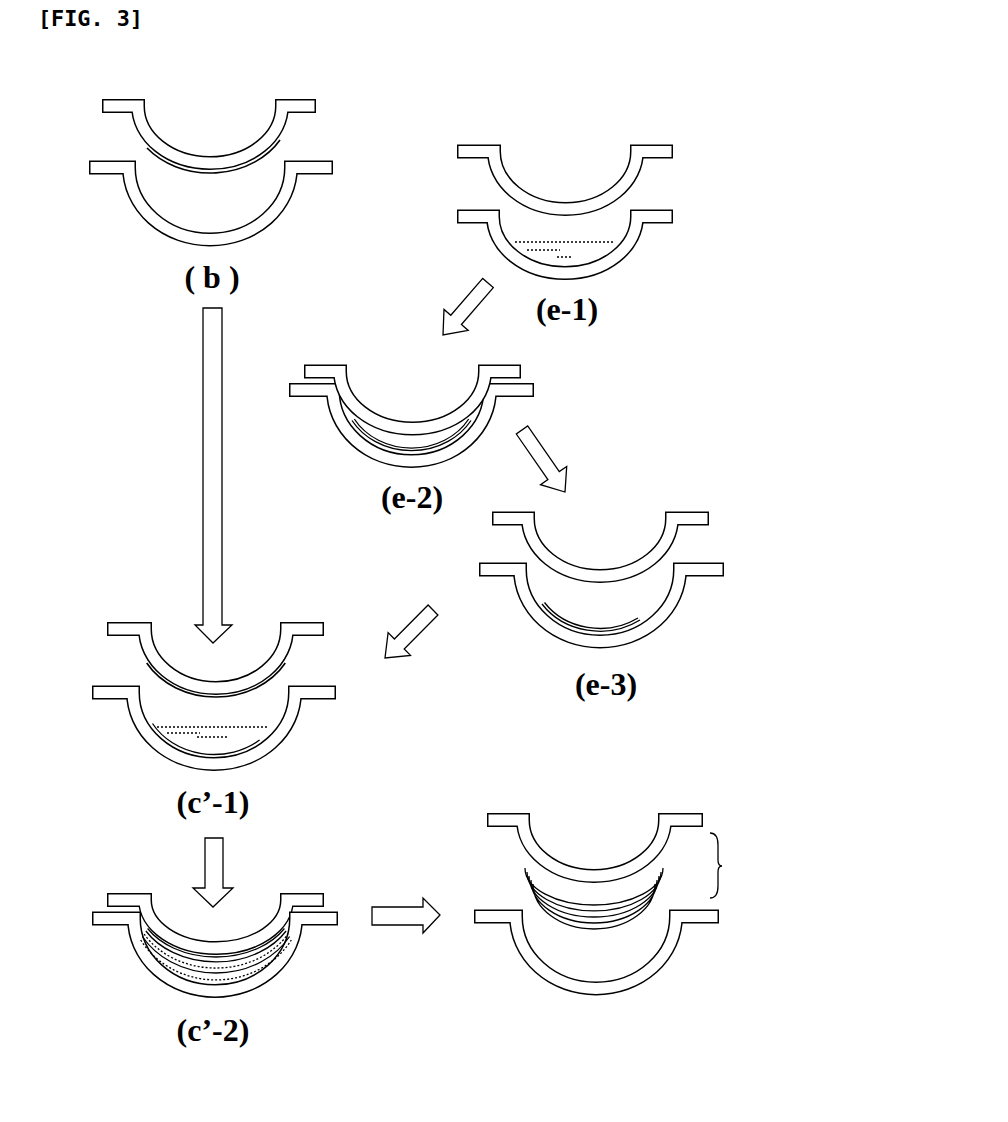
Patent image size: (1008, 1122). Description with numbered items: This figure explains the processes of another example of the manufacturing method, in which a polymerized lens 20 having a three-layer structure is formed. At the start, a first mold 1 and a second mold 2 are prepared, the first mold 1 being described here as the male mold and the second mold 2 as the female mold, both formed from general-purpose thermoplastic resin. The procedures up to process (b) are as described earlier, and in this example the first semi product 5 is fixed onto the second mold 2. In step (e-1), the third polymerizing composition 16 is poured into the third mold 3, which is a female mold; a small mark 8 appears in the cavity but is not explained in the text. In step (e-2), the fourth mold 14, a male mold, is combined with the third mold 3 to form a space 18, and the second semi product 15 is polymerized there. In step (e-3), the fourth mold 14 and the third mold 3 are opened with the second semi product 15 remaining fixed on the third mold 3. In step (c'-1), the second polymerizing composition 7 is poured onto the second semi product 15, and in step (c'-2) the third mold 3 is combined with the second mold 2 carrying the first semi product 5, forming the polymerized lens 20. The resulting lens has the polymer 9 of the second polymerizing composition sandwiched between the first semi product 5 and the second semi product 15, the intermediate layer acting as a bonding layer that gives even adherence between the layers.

The first mold 1 is at (133, 203).
The second mold 2 is at (177, 147).
The third mold 3 is at (637, 242).
The first semi product 5 is at (187, 173).
The second polymerizing composition 7 is at (178, 727).
The gap 8 is at (565, 231).
The polymer of the second polymerizing composition 9 is at (607, 912).
The fourth mold 14 is at (528, 185).
The second semi product 15 is at (627, 620).
The third polymerizing composition 16 is at (597, 243).
The space 18 is at (433, 445).
The polymerized lens 20 is at (732, 865).